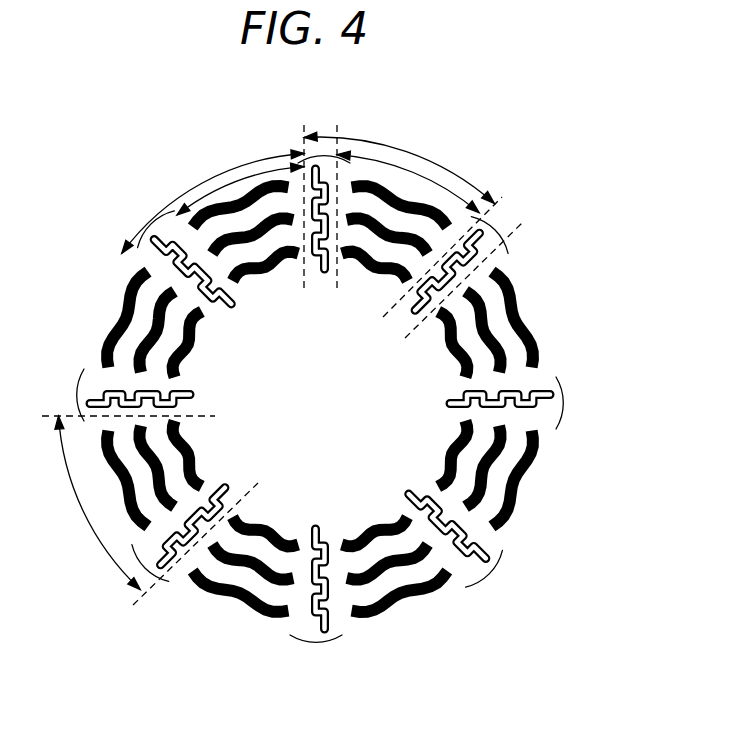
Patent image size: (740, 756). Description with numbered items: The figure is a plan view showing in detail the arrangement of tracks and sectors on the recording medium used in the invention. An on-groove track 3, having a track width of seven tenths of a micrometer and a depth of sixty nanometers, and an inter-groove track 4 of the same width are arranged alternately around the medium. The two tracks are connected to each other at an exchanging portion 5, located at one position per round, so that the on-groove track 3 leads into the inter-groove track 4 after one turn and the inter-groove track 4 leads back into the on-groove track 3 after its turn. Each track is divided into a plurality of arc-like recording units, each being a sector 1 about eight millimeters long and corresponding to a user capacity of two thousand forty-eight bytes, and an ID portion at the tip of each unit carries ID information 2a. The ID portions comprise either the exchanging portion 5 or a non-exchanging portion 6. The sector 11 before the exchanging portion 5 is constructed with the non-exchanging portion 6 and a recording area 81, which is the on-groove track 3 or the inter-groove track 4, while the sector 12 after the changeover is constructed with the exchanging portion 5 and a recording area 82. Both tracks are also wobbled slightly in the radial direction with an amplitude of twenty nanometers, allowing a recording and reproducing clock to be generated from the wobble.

The sector 1 is at (80, 505).
The ID information 2a is at (327, 275).
The on-groove track 3 is at (520, 298).
The inter-groove track 4 is at (500, 344).
The exchanging portion 5 is at (325, 158).
The non-exchanging portion 6 is at (321, 428).
The sector before the exchanging portion 11 is at (197, 182).
The sector after the exchanging portion 12 is at (452, 172).
The recording area 81 is at (245, 178).
The recording area 82 is at (404, 164).